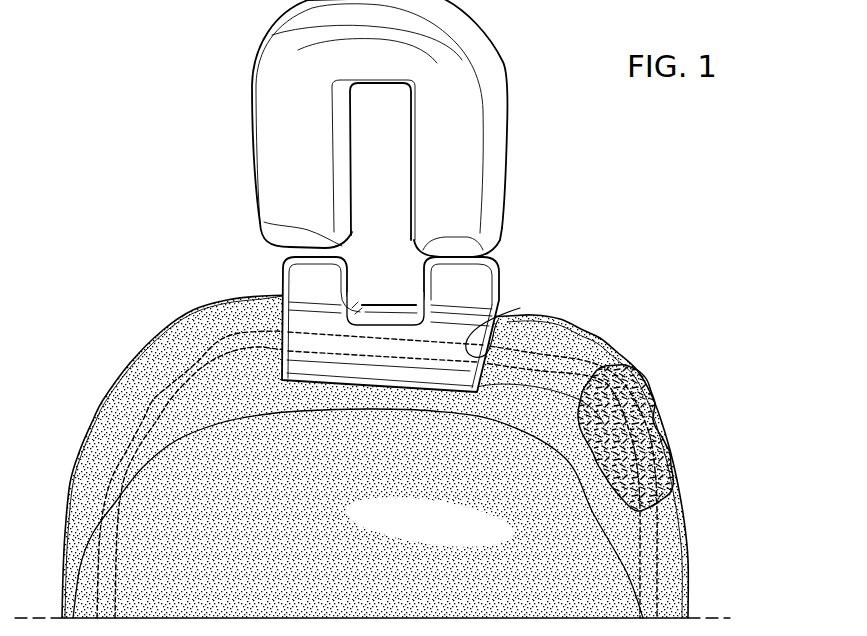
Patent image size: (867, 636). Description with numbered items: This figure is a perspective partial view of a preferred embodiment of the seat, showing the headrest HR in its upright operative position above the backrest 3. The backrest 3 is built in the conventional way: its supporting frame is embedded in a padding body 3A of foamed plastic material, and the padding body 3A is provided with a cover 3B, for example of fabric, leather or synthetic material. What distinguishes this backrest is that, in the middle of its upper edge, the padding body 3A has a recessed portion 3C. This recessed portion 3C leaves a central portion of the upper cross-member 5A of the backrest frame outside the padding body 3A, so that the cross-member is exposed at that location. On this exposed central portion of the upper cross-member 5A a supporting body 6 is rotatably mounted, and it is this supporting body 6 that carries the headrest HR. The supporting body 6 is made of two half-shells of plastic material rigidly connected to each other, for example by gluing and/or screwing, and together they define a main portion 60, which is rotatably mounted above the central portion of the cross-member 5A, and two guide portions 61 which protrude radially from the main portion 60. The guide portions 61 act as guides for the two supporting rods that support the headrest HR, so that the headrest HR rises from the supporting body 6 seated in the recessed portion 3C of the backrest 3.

The headrest HR is at (232, 100).
The backrest 3 is at (630, 322).
The padding body 3A is at (673, 438).
The cover 3B is at (690, 567).
The recessed portion 3C is at (520, 308).
The upper cross-member 5A is at (305, 330).
The supporting body 6 is at (506, 262).
The main portion 60 is at (313, 376).
The guide portions 61 is at (421, 276).